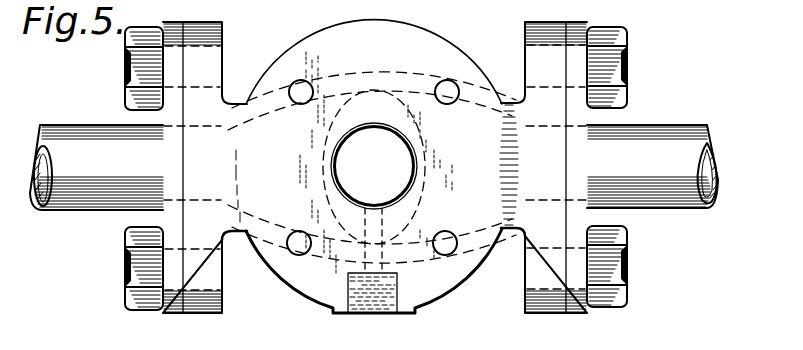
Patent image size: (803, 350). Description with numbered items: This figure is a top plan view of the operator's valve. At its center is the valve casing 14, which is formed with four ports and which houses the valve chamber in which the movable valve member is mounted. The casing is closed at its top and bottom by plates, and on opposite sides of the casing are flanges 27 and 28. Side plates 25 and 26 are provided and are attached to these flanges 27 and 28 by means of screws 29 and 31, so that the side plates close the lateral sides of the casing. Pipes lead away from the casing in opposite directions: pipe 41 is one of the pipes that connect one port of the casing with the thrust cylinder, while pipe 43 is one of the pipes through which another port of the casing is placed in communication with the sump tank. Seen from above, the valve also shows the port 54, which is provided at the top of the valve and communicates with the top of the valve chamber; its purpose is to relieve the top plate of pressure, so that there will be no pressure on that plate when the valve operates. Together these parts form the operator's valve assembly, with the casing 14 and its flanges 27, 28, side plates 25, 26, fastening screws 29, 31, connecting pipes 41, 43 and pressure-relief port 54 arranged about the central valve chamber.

The valve casing 14 is at (453, 289).
The side plate 25 is at (587, 118).
The side plate 26 is at (163, 217).
The flange 27 is at (552, 314).
The flange 28 is at (205, 314).
The screw 29 is at (617, 272).
The screw 31 is at (125, 289).
The pipe 41 is at (687, 143).
The pipe 43 is at (75, 142).
The port 54 is at (383, 214).